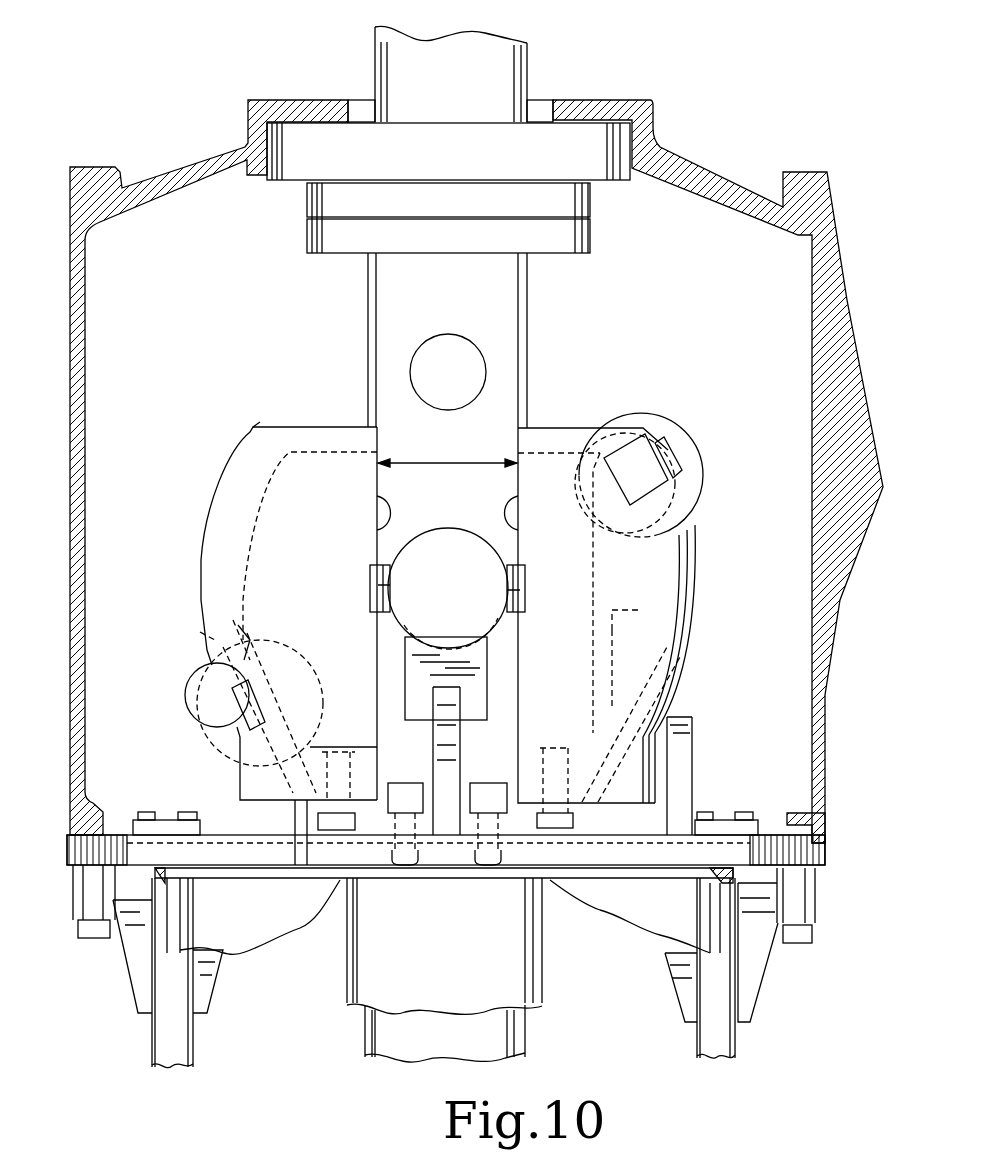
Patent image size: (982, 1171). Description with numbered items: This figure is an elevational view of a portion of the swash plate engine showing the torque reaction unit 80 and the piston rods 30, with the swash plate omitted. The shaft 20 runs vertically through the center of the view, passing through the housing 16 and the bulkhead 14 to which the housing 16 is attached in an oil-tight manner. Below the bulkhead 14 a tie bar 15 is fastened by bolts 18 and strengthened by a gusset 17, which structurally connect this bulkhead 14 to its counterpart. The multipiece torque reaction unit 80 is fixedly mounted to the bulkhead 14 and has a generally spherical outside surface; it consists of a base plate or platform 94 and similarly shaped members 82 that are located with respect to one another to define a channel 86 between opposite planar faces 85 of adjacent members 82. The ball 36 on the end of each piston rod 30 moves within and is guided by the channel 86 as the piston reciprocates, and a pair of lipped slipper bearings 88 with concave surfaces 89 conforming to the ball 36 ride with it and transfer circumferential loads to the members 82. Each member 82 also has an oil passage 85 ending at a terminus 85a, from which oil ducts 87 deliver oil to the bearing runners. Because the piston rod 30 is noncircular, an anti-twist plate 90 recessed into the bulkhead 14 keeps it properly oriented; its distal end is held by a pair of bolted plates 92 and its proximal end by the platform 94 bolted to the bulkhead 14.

The bulkhead 14 is at (825, 858).
The tie bar 15 is at (193, 1057).
The housing 16 is at (825, 793).
The gusset 17 is at (120, 975).
The bolt 18 is at (98, 940).
The shaft 20 is at (375, 84).
The piston rod 30 is at (228, 800).
The ball 36 is at (448, 556).
The torque reaction unit 80 is at (212, 456).
The torque reaction unit member 82 is at (200, 560).
The planar face / oil passage 85 is at (377, 497).
The terminus 85a is at (205, 597).
The channel 86 is at (438, 463).
The oil duct 87 is at (250, 600).
The lipped slipper bearing 88 is at (683, 477).
The concave surface 89 is at (375, 577).
The anti-twist plate 90 is at (200, 845).
The bolted plate 92 is at (170, 815).
The base plate / torque reaction unit platform 94 is at (510, 880).